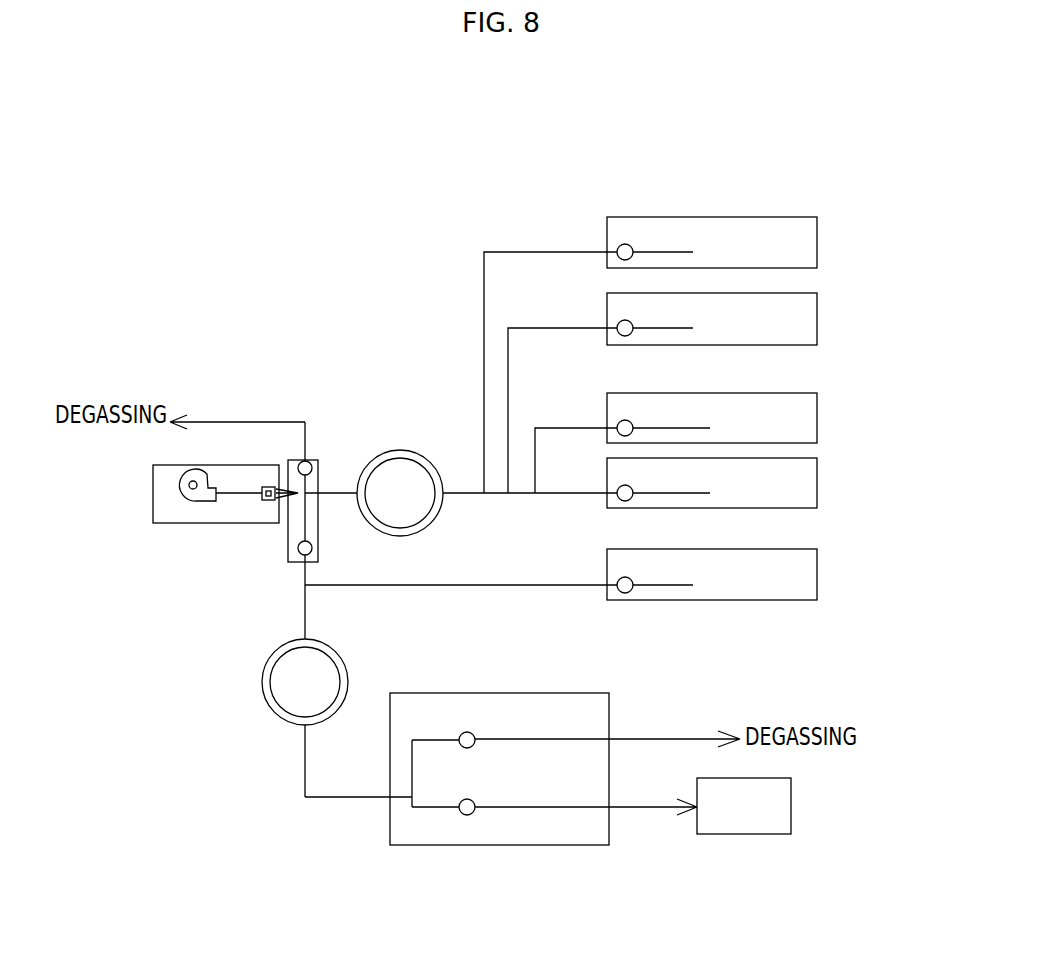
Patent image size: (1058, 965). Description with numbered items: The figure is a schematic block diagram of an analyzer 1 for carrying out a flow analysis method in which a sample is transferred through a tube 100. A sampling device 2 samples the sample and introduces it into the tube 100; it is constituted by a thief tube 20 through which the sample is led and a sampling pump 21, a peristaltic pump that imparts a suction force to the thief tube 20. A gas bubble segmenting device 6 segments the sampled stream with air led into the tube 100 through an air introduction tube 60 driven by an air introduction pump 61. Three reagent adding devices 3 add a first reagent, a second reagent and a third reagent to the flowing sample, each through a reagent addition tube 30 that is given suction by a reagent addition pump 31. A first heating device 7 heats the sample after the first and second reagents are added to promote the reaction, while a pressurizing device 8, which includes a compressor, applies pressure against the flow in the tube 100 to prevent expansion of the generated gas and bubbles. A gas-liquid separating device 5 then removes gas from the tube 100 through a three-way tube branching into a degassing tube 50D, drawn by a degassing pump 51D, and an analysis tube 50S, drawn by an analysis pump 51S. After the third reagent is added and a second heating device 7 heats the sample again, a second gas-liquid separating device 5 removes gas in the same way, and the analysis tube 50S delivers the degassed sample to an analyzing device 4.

The analyzer 1 is at (515, 192).
The sampling device 2 is at (818, 460).
The thief tube 20 is at (662, 492).
The sampling pump 21 is at (636, 492).
The reagent adding device 3 is at (818, 217).
The reagent addition tube 30 is at (661, 251).
The reagent addition pump 31 is at (636, 251).
The analyzing device 4 is at (717, 778).
The gas-liquid separating device 5 is at (287, 555).
The degassing tube 50D is at (220, 422).
The analysis tube 50S is at (544, 807).
The degassing pump 51D is at (310, 466).
The analysis pump 51S is at (312, 548).
The gas bubble segmenting device 6 is at (818, 393).
The air introduction tube 60 is at (662, 427).
The air introduction pump 61 is at (636, 427).
The heating device 7 is at (413, 455).
The pressurizing device 8 is at (153, 465).
The tube 100 is at (330, 797).